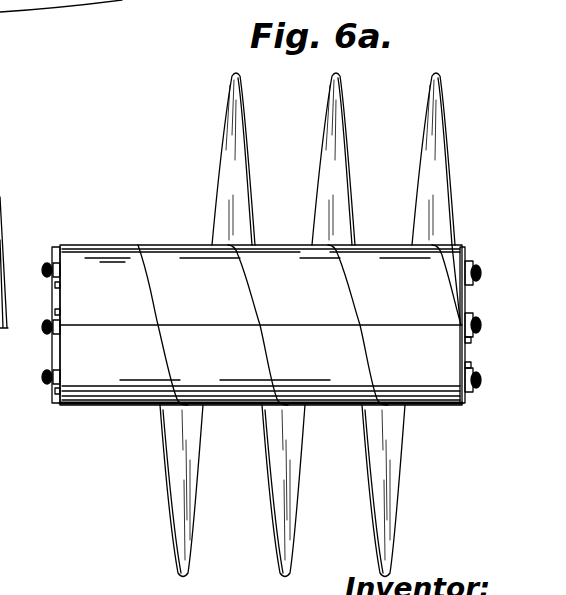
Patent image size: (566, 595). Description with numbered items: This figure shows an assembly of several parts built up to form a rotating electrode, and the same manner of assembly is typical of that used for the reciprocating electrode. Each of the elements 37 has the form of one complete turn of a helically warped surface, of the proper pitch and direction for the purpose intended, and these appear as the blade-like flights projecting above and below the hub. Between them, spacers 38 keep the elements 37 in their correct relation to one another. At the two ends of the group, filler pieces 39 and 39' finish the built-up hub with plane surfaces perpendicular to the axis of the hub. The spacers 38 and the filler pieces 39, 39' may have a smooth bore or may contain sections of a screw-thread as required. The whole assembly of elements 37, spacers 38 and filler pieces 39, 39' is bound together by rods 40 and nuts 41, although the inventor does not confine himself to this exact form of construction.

The element 37 is at (170, 485).
The spacer 38 is at (185, 262).
The filler piece 39 is at (252, 329).
The filler piece 39' is at (465, 330).
The rod 40 is at (47, 266).
The nut 41 is at (56, 312).